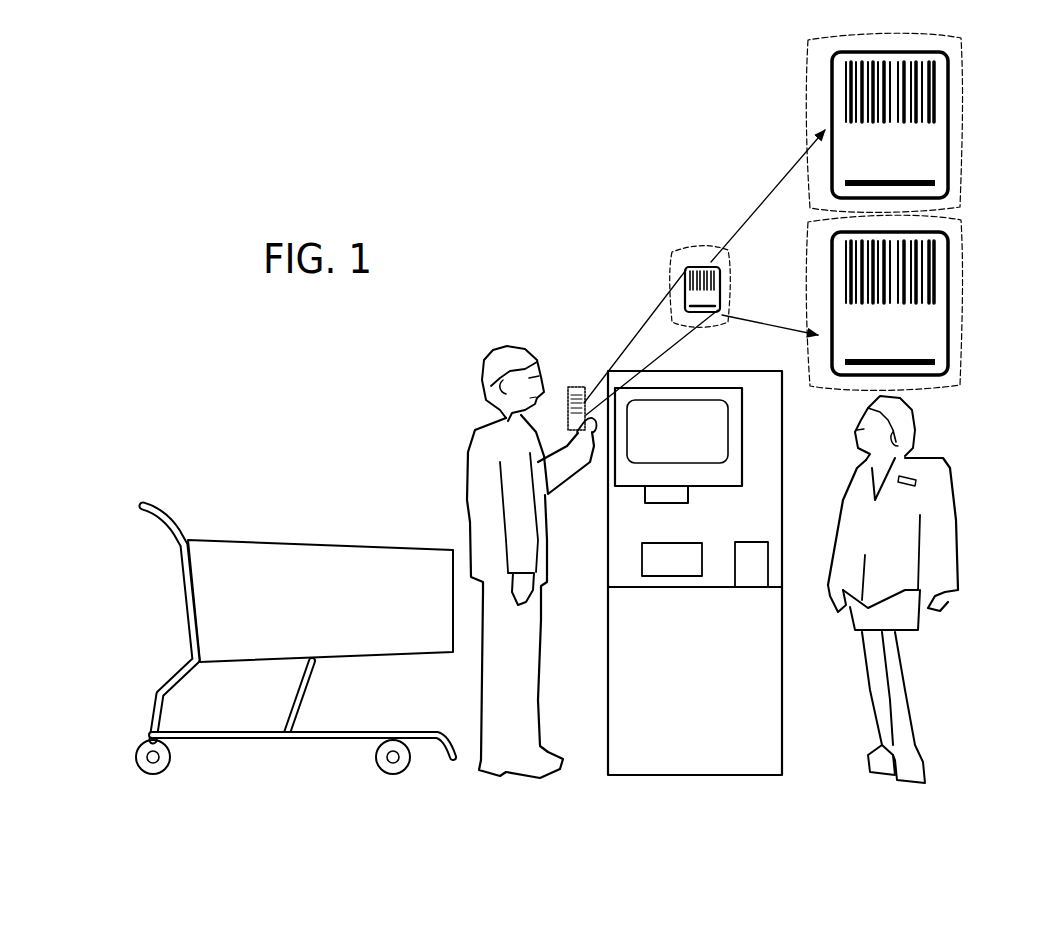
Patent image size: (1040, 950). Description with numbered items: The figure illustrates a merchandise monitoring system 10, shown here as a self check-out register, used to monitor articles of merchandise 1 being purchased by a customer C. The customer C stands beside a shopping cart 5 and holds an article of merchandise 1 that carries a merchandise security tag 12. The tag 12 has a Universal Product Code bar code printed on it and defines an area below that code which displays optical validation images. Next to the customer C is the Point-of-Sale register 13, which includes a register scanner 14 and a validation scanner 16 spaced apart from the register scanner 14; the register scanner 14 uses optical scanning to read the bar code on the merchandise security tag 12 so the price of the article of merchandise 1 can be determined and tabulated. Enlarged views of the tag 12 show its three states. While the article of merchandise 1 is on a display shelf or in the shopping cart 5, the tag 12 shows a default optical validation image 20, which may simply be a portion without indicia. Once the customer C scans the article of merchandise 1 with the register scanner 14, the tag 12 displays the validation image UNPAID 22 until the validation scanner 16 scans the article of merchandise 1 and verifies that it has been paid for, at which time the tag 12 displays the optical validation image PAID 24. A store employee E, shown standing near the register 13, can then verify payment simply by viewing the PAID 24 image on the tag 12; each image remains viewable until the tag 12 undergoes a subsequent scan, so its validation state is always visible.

The article of merchandise 1 is at (799, 267).
The shopping cart 5 is at (320, 557).
The merchandise monitoring system 10 is at (719, 596).
The merchandise security tag 12 is at (578, 388).
The Point-of-Sale register 13 is at (767, 437).
The register scanner 14 is at (687, 557).
The validation scanner 16 is at (757, 563).
The default optical validation image 20 is at (713, 297).
The validation image UNPAID 22 is at (935, 178).
The optical validation image PAID 24 is at (930, 326).
The customer C is at (470, 440).
The store employee E is at (955, 510).